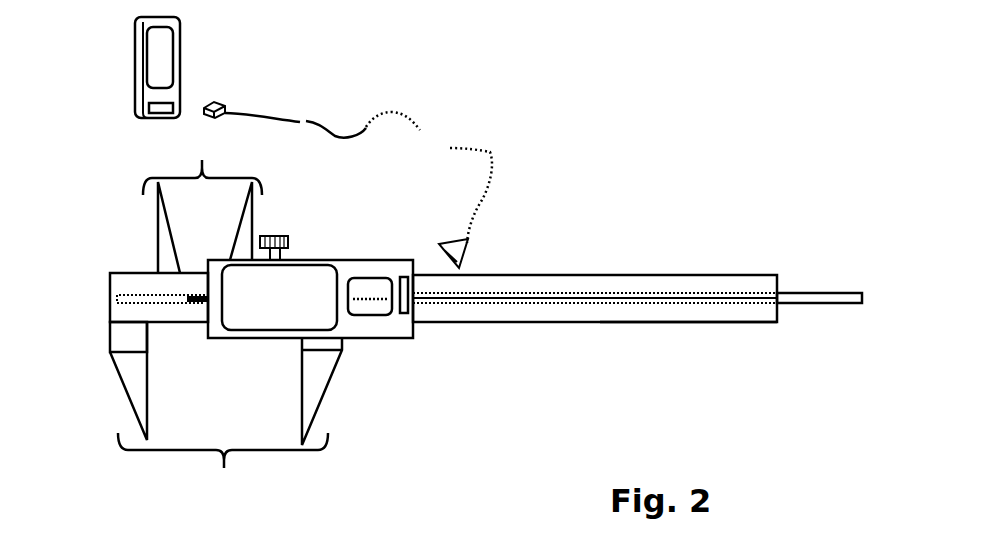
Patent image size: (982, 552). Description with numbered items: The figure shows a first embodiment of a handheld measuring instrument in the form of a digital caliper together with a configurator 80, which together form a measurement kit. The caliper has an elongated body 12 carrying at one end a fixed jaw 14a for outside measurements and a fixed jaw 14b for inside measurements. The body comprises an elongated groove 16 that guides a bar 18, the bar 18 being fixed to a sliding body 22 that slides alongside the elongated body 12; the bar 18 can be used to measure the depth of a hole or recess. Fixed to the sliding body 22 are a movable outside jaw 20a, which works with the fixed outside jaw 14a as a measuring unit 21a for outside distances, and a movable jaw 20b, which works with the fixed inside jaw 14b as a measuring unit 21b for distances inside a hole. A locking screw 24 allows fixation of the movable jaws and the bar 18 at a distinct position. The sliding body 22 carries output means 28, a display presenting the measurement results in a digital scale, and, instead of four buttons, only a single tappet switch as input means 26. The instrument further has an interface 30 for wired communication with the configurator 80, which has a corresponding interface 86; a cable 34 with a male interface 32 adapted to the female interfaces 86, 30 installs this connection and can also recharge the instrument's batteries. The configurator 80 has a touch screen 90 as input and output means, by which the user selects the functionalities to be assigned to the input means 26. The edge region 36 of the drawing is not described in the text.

The elongated body 12 is at (123, 282).
The fixed jaw for outside measurements 14a is at (132, 373).
The fixed jaw for inside measurements 14b is at (167, 240).
The elongated groove 16 is at (117, 303).
The bar 18 is at (598, 298).
The movable outside jaw 20a is at (313, 377).
The movable jaw 20b is at (247, 230).
The measuring unit 21a is at (223, 472).
The measuring unit 21b is at (202, 160).
The sliding body 22 is at (392, 263).
The locking screw 24 is at (288, 237).
The input means 26 is at (372, 308).
The output means 28 is at (317, 270).
The interface 30 is at (413, 295).
The male interface 32 is at (215, 100).
The cable 34 is at (340, 133).
The rod bottom edge 36 is at (688, 365).
The configurator 80 is at (124, 49).
The interface 86 is at (148, 110).
The touch screen 90 is at (153, 73).